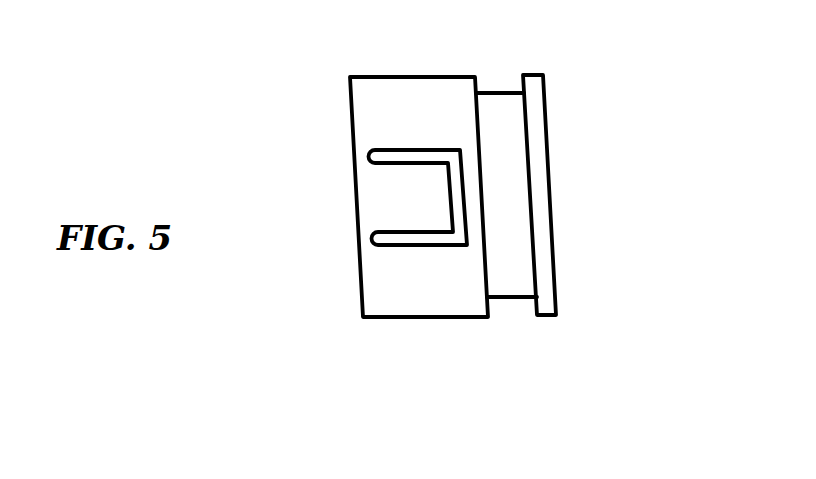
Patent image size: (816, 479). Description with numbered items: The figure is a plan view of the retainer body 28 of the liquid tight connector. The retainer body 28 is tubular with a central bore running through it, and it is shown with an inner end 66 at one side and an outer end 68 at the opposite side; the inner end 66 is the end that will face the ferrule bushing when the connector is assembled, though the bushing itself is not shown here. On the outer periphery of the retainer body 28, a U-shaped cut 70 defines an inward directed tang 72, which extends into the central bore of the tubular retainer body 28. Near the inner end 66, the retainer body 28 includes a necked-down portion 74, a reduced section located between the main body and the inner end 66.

The retainer body 28 is at (444, 238).
The inner end 66 is at (544, 183).
The outer end 68 is at (357, 223).
The U-shaped cut 70 is at (458, 155).
The inward directed tang 72 is at (423, 197).
The necked-down portion 74 is at (498, 86).